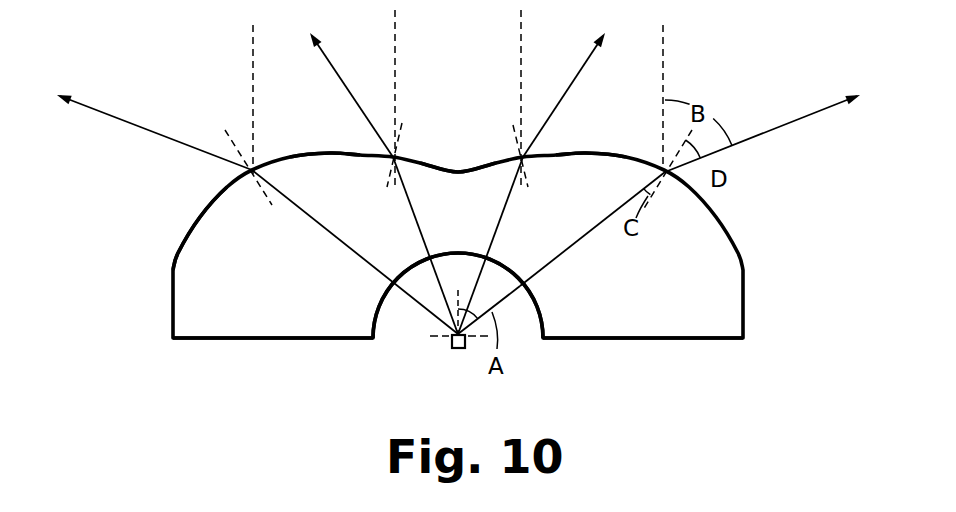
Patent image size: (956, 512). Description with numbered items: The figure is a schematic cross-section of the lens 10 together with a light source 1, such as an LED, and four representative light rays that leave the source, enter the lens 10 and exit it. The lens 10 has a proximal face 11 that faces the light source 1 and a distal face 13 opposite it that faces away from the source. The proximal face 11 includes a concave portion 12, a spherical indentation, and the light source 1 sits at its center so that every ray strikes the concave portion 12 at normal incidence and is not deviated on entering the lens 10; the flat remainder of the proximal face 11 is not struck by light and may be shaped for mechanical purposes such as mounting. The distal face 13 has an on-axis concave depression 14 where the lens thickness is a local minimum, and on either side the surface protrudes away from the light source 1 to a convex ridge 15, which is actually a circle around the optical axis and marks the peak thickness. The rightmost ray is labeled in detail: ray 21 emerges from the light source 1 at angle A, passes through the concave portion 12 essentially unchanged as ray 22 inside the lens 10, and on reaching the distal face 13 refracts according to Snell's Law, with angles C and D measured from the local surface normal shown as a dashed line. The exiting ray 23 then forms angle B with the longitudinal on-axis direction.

The light source 1 is at (452, 348).
The lens 10 is at (252, 289).
The proximal face 11 is at (280, 339).
The concave portion 12 is at (537, 316).
The distal face 13 is at (185, 234).
The on-axis concave depression 14 is at (460, 170).
The convex ridge 15 is at (338, 152).
The ray 21 is at (507, 298).
The ray 22 is at (563, 253).
The ray 23 is at (813, 115).